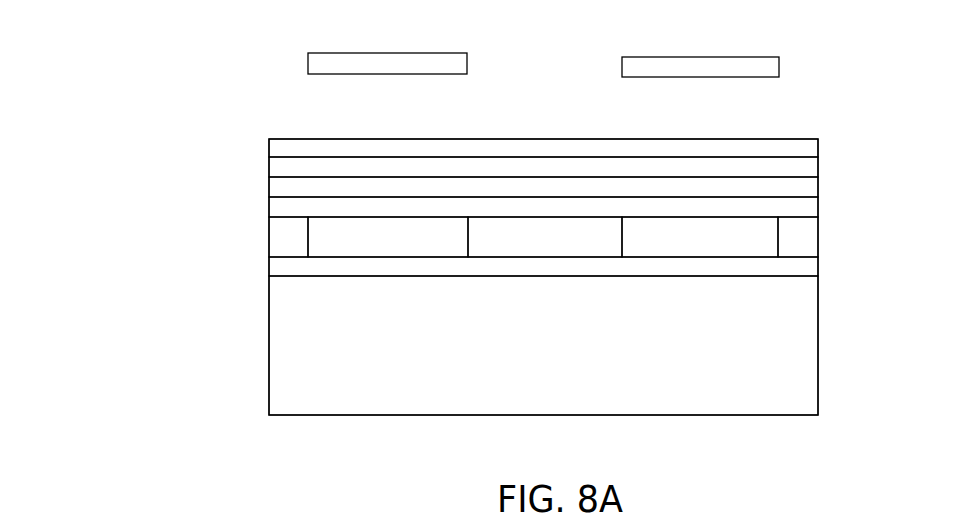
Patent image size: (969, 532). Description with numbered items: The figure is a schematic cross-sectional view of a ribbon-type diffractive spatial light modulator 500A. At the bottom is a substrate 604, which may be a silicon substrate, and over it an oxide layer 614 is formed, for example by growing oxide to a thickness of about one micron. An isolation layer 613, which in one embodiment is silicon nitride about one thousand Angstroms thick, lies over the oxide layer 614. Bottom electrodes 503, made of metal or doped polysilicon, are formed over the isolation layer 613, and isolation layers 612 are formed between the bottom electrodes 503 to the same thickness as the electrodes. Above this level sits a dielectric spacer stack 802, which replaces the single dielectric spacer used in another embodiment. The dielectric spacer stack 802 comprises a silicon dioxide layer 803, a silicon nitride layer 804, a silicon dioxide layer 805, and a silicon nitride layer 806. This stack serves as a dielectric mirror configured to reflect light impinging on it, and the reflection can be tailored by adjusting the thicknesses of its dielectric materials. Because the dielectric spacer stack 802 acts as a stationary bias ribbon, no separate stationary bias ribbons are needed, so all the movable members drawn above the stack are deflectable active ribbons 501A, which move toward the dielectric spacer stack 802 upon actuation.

The ribbon-type diffractive spatial light modulator 500A is at (95, 159).
The deflectable active ribbon 501A is at (346, 58).
The oxide layer 614 is at (565, 116).
The silicon dioxide layer 803 is at (273, 147).
The silicon nitride layer 804 is at (273, 164).
The silicon dioxide layer 805 is at (273, 184).
The silicon nitride layer 806 is at (273, 205).
The dielectric spacer stack 802 is at (842, 222).
The isolation layer 612 is at (275, 239).
The bottom electrode 503 is at (405, 251).
The isolation layer 613 is at (278, 266).
The substrate 604 is at (576, 340).